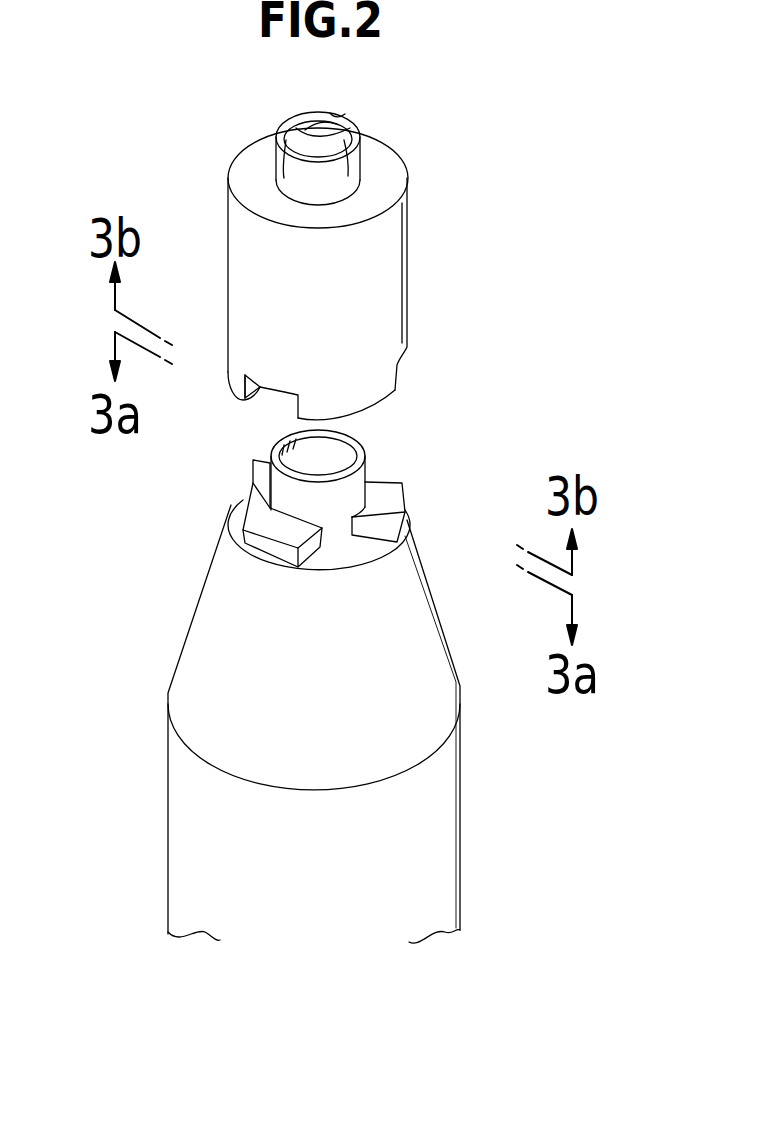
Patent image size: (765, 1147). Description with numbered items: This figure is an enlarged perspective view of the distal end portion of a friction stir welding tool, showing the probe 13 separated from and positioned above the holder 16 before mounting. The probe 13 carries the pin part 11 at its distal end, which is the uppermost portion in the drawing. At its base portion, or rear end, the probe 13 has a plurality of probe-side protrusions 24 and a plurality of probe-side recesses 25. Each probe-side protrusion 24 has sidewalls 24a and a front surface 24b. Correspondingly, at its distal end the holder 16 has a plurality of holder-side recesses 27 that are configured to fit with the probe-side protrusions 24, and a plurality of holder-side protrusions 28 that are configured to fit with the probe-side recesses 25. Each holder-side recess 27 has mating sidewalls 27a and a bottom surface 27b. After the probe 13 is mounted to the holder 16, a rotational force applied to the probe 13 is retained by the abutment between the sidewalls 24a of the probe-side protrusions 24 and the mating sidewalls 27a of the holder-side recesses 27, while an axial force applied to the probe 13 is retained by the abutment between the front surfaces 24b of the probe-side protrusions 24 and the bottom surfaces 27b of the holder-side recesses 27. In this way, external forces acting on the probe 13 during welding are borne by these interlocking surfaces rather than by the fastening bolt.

The pin part 11 is at (360, 150).
The probe 13 is at (393, 273).
The holder 16 is at (442, 827).
The probe-side protrusion 24 is at (372, 392).
The sidewall of probe-side protrusion 24a is at (297, 403).
The front surface of probe-side protrusion 24b is at (363, 413).
The probe-side recess 25 is at (243, 405).
The holder-side recess 27 is at (336, 562).
The sidewall of holder-side recess 27a is at (300, 568).
The bottom surface of holder-side recess 27b is at (354, 552).
The holder-side protrusion 28 is at (262, 522).